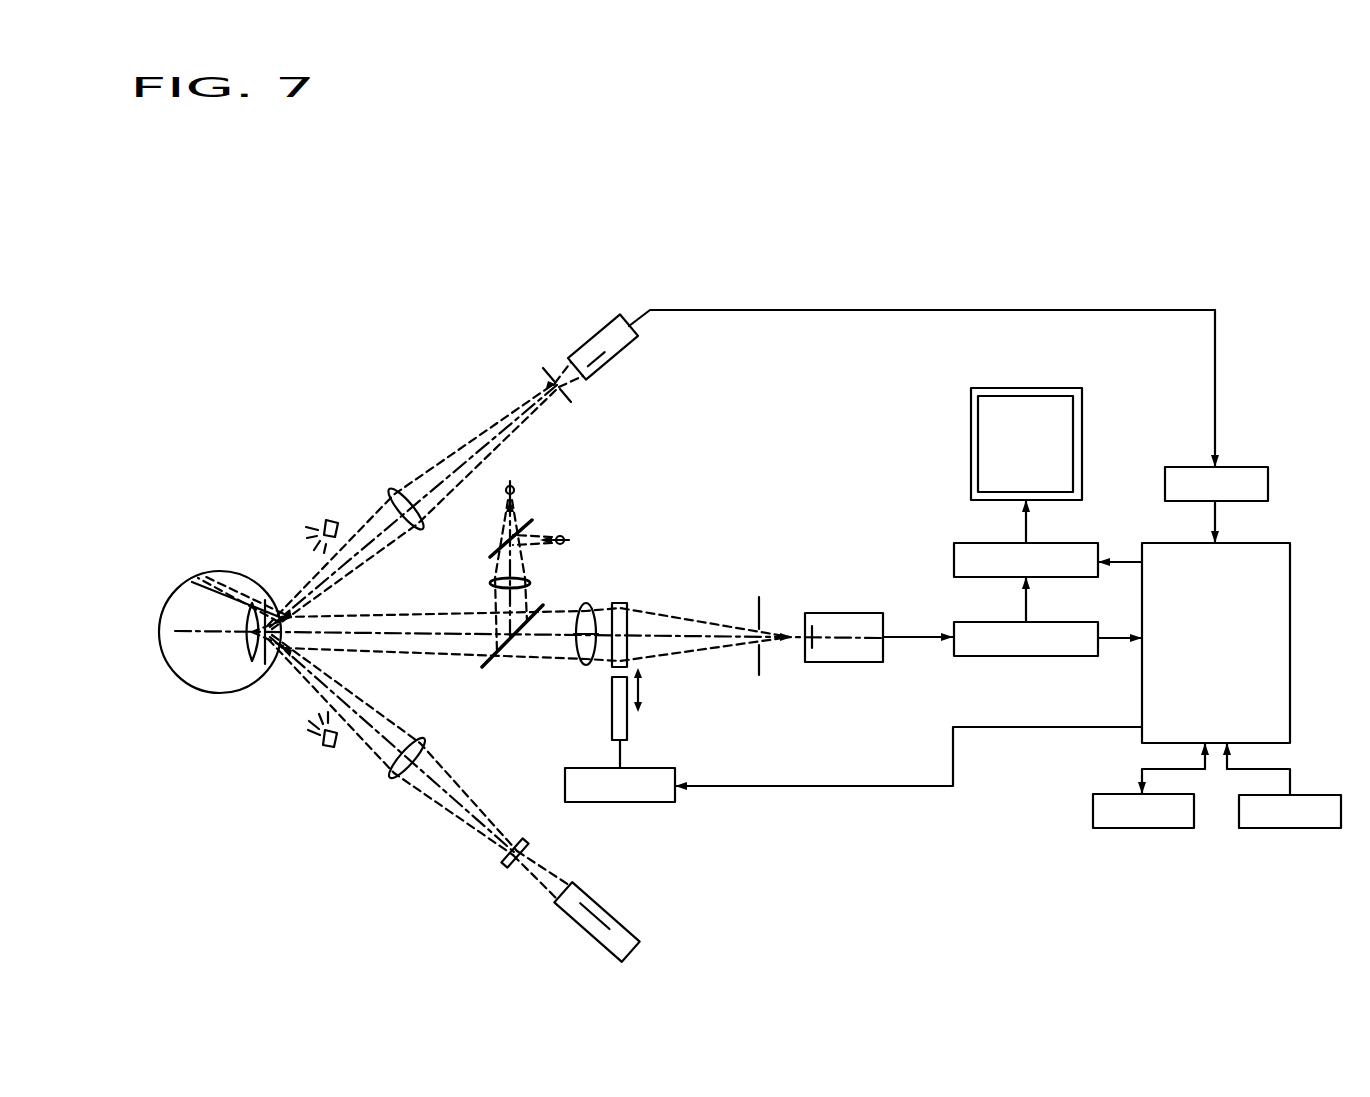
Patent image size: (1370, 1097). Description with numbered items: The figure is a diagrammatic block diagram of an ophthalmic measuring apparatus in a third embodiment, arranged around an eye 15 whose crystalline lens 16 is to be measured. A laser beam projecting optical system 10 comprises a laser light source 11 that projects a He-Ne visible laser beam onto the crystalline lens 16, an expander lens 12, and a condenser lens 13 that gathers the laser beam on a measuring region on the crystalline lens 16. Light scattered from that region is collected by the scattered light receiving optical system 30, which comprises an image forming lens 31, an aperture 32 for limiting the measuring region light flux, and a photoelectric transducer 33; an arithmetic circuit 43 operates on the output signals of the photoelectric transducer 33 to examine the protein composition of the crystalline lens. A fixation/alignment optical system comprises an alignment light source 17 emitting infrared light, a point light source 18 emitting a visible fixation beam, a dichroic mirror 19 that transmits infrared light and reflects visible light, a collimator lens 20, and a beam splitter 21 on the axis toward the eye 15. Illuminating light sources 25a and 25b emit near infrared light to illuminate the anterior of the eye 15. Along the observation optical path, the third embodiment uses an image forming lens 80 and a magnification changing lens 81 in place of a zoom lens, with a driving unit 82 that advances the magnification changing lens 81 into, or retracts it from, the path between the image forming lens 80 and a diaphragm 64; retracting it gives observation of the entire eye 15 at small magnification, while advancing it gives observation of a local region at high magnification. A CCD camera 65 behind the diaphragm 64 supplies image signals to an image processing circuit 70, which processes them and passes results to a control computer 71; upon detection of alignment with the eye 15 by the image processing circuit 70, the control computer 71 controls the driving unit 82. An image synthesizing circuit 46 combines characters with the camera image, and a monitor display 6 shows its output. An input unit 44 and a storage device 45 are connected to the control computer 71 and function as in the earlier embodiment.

The monitor display 6 is at (971, 420).
The laser beam projecting optical system 10 is at (450, 830).
The laser light source 11 is at (598, 905).
The expander lens 12 is at (516, 835).
The condenser lens 13 is at (388, 782).
The eye 15 is at (195, 680).
The crystalline lens 16 is at (252, 660).
The alignment light source 17 is at (516, 487).
The point light source 18 is at (566, 538).
The dichroic mirror 19 is at (497, 545).
The collimator lens 20 is at (490, 583).
The beam splitter 21 is at (482, 668).
The illuminating light source 25a is at (328, 520).
The illuminating light source 25b is at (327, 747).
The scattered light receiving optical system 30 is at (452, 436).
The image forming lens 31 is at (394, 486).
The aperture 32 is at (548, 381).
The photoelectric transducer 33 is at (625, 352).
The arithmetic circuit 43 is at (1185, 468).
The input unit 44 is at (1292, 828).
The storage device 45 is at (1145, 828).
The image synthesizing circuit 46 is at (954, 548).
The diaphragm 64 is at (759, 600).
The CCD camera 65 is at (838, 613).
The image processing circuit 70 is at (990, 657).
The control computer 71 is at (1293, 607).
The image forming lens 80 is at (590, 602).
The magnification changing lens 81 is at (627, 722).
The driving unit 82 is at (652, 802).